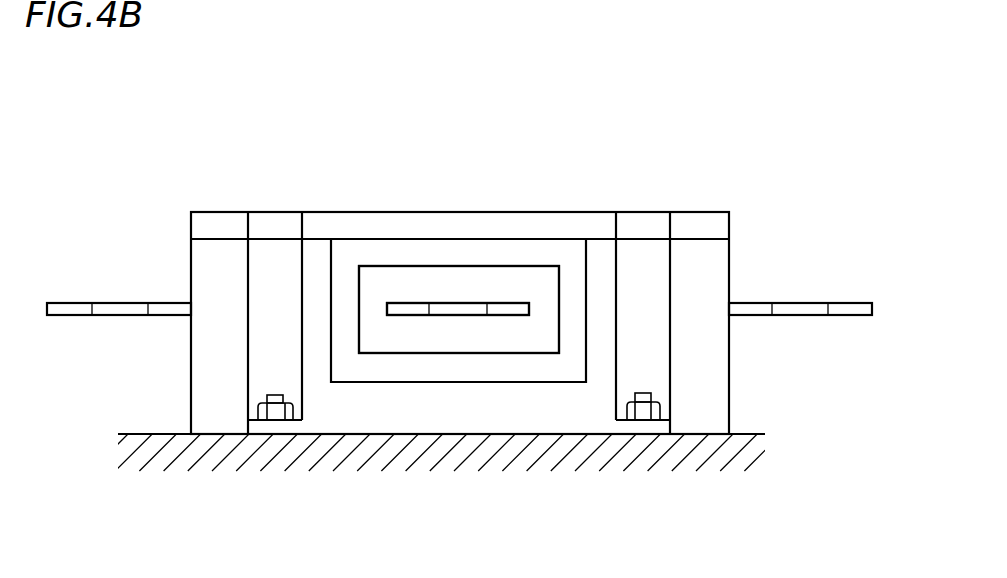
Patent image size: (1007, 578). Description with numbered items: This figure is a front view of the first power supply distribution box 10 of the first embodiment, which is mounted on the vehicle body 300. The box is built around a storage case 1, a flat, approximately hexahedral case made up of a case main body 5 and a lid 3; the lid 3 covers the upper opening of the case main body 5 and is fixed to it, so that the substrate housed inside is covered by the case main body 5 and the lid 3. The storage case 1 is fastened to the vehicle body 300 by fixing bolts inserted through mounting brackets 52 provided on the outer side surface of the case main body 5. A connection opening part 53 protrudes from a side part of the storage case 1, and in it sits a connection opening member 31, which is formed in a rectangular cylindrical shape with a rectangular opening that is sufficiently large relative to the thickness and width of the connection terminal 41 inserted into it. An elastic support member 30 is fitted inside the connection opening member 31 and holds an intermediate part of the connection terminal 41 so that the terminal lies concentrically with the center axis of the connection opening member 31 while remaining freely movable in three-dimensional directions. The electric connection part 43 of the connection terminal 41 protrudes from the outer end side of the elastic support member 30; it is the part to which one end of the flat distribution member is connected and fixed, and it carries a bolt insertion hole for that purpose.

The storage case 1 is at (245, 107).
The lid 3 is at (233, 210).
The case main body 5 is at (186, 267).
The first power supply distribution box 10 is at (670, 187).
The elastic support member 30 is at (513, 294).
The connection opening member 31 is at (365, 241).
The connection terminal 41 is at (93, 300).
The electric connection part 43 is at (448, 318).
The mounting bracket 52 is at (643, 423).
The connection opening part 53 is at (497, 384).
The vehicle body 300 is at (160, 433).